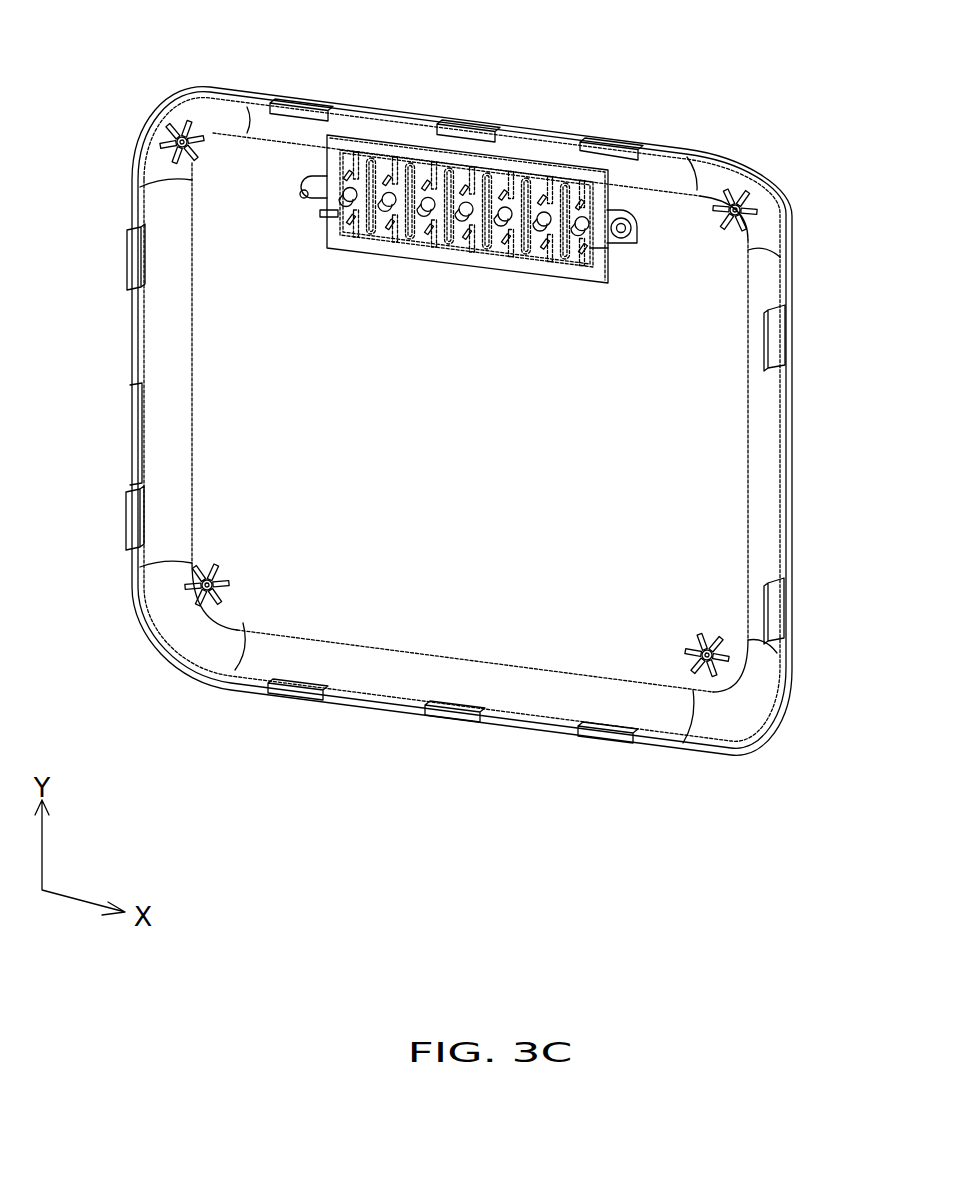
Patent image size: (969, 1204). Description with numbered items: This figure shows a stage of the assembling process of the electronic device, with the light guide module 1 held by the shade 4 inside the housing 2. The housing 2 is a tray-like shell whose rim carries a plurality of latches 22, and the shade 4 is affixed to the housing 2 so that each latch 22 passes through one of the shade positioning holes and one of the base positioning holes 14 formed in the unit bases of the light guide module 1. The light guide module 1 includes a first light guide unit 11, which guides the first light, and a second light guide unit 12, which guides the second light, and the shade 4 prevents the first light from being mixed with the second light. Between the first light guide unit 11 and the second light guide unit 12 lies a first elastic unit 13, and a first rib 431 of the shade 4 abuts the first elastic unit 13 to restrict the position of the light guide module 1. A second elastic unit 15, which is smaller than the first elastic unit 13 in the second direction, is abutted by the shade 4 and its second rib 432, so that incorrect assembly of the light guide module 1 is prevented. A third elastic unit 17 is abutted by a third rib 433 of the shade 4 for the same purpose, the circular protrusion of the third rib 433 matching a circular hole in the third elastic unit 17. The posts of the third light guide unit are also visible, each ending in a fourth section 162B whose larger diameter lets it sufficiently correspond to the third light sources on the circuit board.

The light guide module 1 is at (448, 158).
The housing 2 is at (663, 147).
The shade 4 is at (315, 242).
The first light guide unit 11 is at (353, 237).
The second light guide unit 12 is at (397, 238).
The first elastic unit 13 is at (371, 158).
The base positioning holes 14 is at (342, 173).
The second elastic unit 15 is at (487, 187).
The third elastic unit 17 is at (436, 159).
The latches 22 is at (302, 173).
The fourth section 162B is at (536, 200).
The first rib 431 is at (373, 238).
The second rib 432 is at (487, 240).
The third rib 433 is at (413, 240).